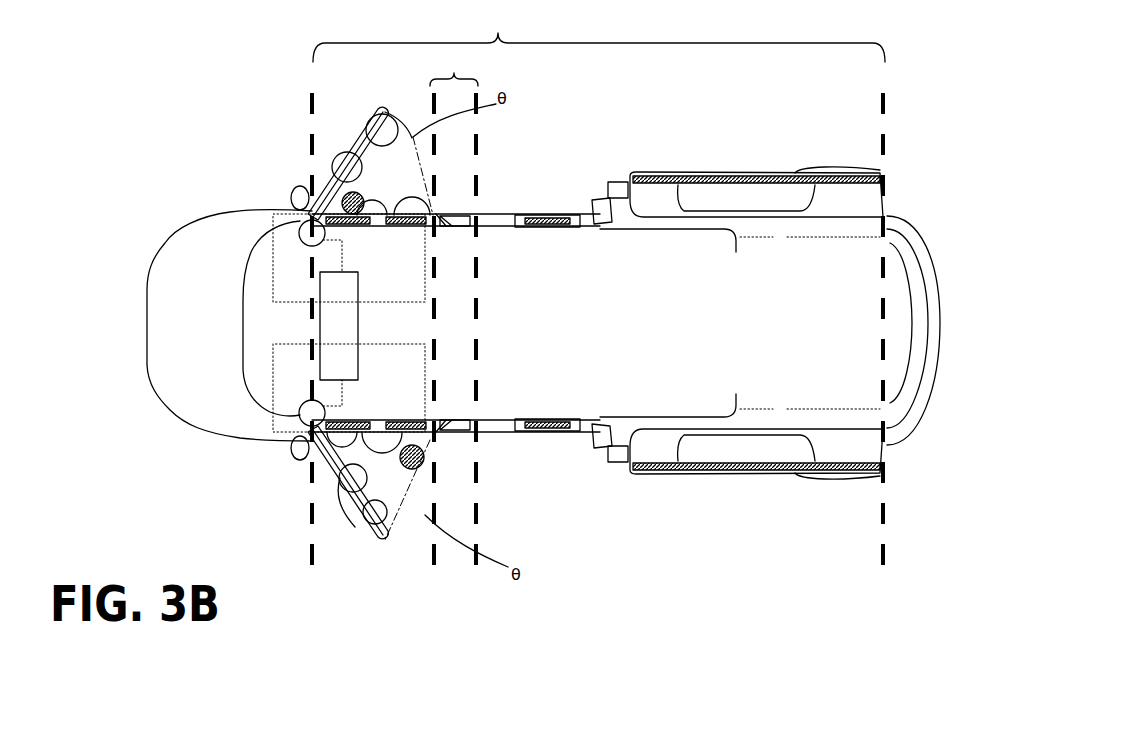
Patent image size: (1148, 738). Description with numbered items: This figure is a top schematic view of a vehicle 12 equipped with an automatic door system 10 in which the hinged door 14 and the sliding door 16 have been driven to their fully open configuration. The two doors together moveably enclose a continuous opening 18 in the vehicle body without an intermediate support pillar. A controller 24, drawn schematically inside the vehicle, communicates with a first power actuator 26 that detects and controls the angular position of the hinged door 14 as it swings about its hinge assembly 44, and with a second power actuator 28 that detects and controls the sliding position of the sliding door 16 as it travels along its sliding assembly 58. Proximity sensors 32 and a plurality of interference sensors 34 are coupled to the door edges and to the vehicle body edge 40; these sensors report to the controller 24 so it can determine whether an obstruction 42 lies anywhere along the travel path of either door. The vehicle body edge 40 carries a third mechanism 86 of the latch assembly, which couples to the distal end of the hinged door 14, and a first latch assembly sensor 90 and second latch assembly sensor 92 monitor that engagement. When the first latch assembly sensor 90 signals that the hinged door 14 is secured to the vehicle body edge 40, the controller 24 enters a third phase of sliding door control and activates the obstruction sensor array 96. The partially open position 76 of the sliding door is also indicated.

The automatic door system 10 is at (143, 213).
The vehicle 12 is at (244, 226).
The hinged door 14 is at (355, 527).
The sliding door 16 is at (733, 171).
The continuous opening 18 is at (598, 290).
The controller 24 is at (320, 328).
The first power actuator 26 is at (272, 212).
The second power actuator 28 is at (824, 186).
The proximity sensor 32 is at (388, 100).
The interference sensors 34 is at (383, 150).
The vehicle body edge 40 is at (498, 214).
The obstruction 42 is at (362, 196).
The hinge assembly 44 is at (300, 238).
The sliding assembly 58 is at (778, 186).
The partially open position 76 is at (452, 311).
The third mechanism 86 is at (468, 224).
The first latch assembly sensor 90 is at (458, 222).
The second latch assembly sensor 92 is at (618, 322).
The obstruction sensor array 96 is at (596, 195).